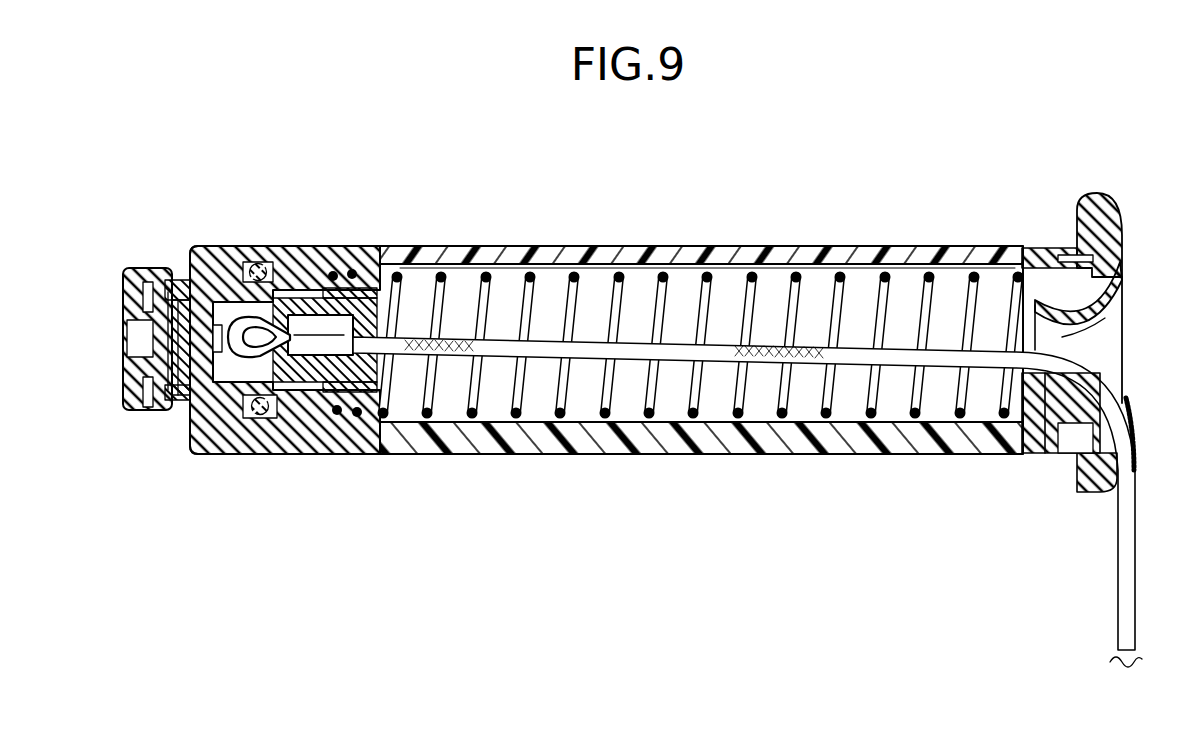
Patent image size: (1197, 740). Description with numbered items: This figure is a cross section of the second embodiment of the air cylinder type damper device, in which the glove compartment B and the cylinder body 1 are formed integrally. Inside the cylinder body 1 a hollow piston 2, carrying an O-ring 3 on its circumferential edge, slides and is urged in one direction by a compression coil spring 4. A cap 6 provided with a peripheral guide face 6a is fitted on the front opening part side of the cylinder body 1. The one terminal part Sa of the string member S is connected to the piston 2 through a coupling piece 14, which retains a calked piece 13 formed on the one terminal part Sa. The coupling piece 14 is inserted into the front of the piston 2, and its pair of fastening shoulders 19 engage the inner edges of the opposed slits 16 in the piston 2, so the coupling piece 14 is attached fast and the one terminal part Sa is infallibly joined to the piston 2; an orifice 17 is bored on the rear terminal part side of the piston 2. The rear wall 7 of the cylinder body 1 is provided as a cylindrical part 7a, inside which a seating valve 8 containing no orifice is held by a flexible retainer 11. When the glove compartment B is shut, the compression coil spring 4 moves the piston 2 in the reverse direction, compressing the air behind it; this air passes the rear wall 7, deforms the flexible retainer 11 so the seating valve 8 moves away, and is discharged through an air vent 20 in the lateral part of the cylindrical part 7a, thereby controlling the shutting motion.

The cylinder body 1 is at (738, 246).
The piston 2 is at (215, 258).
The O-ring 3 is at (250, 258).
The compression coil spring 4 is at (862, 410).
The cap 6 is at (1117, 215).
The peripheral guide face 6a is at (1100, 320).
The rear wall 7 is at (177, 258).
The cylindrical part 7a is at (140, 258).
The seating valve 8 is at (164, 405).
The flexible retainer 11 is at (123, 298).
The calked piece 13 is at (335, 345).
The coupling piece 14 is at (377, 258).
The slits 16 is at (305, 258).
The orifice 17 is at (172, 405).
The fastening shoulders 19 is at (316, 258).
The air vent 20 is at (164, 258).
The glove compartment B is at (550, 437).
The string member S is at (1137, 600).
The one terminal part Sa is at (240, 365).